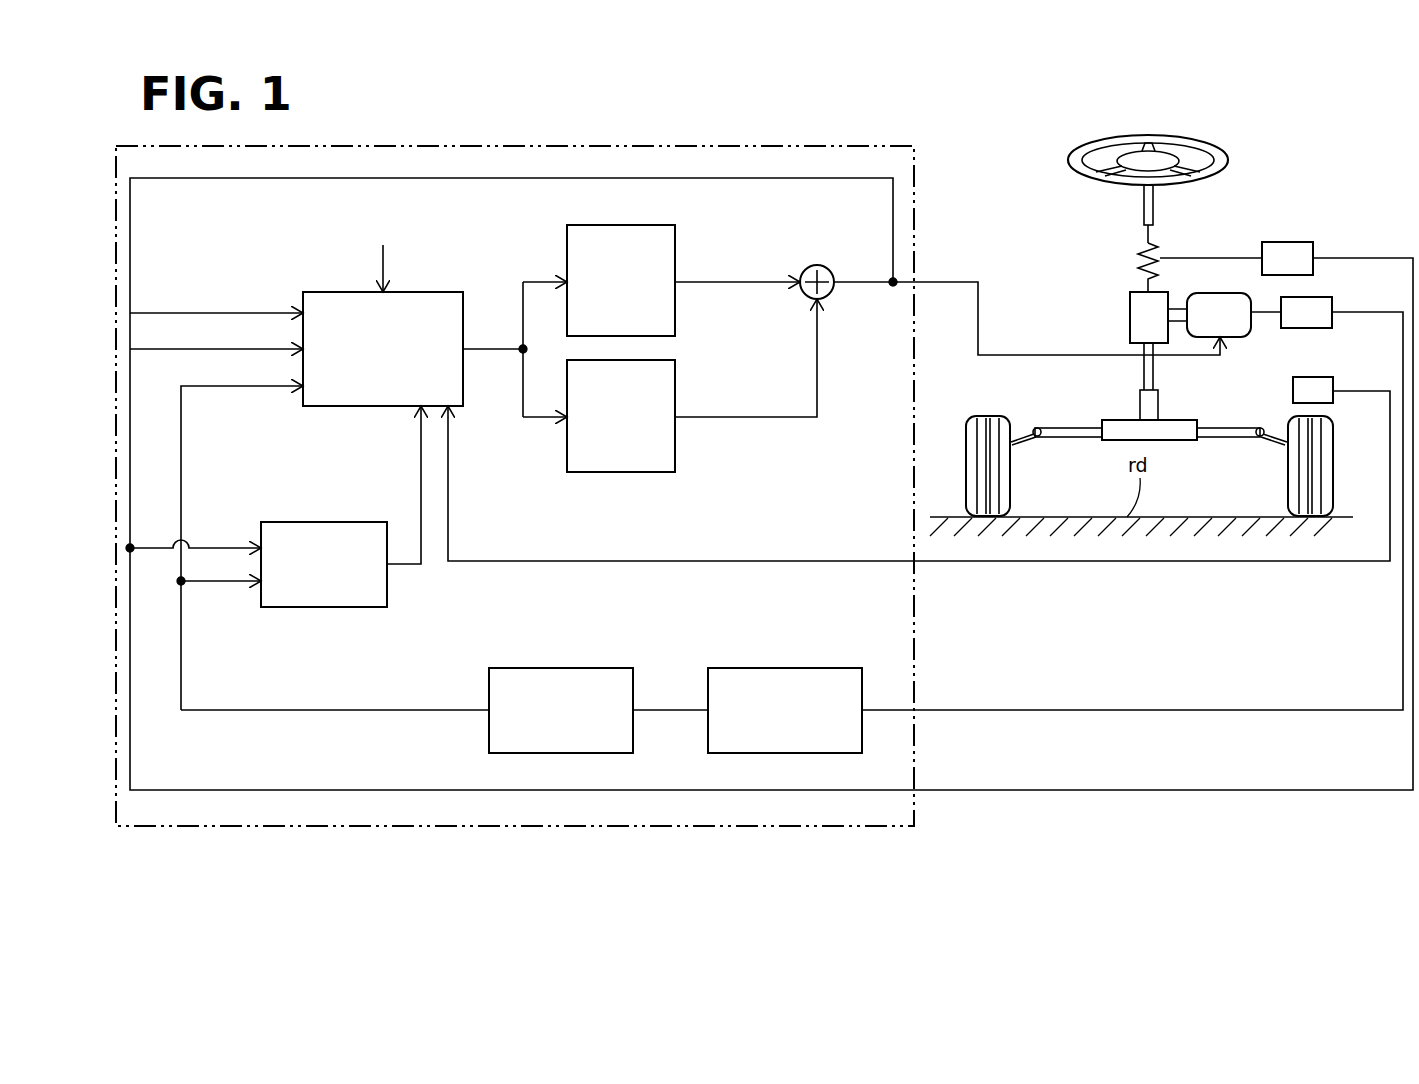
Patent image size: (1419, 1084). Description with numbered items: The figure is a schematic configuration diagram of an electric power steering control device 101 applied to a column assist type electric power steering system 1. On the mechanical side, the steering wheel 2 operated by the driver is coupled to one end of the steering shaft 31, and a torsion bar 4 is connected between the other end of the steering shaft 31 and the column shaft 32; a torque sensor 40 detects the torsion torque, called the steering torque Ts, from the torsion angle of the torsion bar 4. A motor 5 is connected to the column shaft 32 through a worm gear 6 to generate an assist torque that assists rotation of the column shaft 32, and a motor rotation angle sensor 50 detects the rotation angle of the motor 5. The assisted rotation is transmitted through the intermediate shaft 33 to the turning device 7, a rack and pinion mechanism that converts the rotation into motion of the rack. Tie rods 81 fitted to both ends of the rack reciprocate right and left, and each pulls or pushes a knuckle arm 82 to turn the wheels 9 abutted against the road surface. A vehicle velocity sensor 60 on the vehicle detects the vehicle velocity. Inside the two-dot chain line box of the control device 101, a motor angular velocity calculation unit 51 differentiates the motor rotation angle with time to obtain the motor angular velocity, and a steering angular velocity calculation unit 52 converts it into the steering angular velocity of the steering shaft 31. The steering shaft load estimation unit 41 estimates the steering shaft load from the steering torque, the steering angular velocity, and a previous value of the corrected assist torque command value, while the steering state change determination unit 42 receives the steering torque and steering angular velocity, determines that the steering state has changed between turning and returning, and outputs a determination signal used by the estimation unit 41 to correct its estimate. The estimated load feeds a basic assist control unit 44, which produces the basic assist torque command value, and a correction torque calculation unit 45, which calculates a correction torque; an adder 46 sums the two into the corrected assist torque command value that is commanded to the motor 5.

The electric power steering system 1 is at (1303, 178).
The steering wheel 2 is at (1225, 147).
The steering shaft 31 is at (1144, 207).
The torsion bar 4 is at (1135, 258).
The column shaft 32 is at (1130, 313).
The intermediate shaft 33 is at (1146, 372).
The motor 5 is at (1218, 293).
The worm gear 6 is at (1177, 307).
The turning device 7 is at (1120, 420).
The tie rods 81 is at (1072, 437).
The knuckle arm 82 is at (1025, 441).
The wheels 9 is at (962, 455).
The torque sensor 40 is at (1283, 242).
The motor rotation angle sensor 50 is at (1305, 297).
The vehicle velocity sensor 60 is at (1293, 389).
The electric power steering control device 101 is at (916, 160).
The steering shaft load estimation unit 41 is at (340, 292).
The steering state change determination unit 42 is at (293, 522).
The basic assist control unit 44 is at (567, 255).
The correction torque calculation unit 45 is at (567, 452).
The adder 46 is at (806, 270).
The motor angular velocity calculation unit 51 is at (820, 668).
The steering angular velocity calculation unit 52 is at (593, 668).